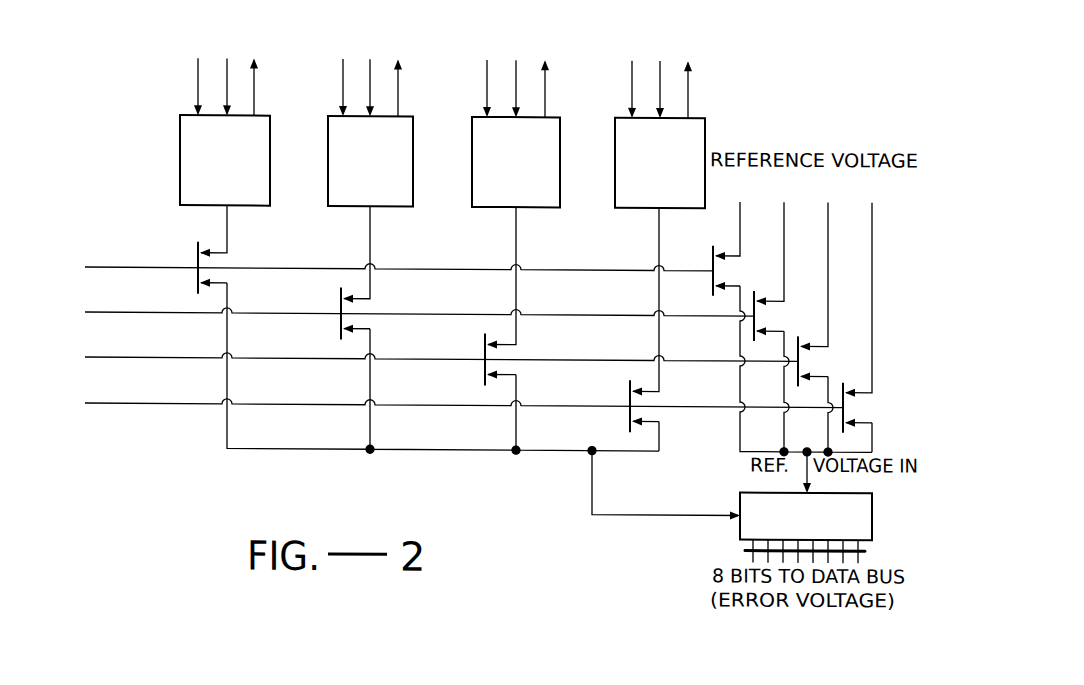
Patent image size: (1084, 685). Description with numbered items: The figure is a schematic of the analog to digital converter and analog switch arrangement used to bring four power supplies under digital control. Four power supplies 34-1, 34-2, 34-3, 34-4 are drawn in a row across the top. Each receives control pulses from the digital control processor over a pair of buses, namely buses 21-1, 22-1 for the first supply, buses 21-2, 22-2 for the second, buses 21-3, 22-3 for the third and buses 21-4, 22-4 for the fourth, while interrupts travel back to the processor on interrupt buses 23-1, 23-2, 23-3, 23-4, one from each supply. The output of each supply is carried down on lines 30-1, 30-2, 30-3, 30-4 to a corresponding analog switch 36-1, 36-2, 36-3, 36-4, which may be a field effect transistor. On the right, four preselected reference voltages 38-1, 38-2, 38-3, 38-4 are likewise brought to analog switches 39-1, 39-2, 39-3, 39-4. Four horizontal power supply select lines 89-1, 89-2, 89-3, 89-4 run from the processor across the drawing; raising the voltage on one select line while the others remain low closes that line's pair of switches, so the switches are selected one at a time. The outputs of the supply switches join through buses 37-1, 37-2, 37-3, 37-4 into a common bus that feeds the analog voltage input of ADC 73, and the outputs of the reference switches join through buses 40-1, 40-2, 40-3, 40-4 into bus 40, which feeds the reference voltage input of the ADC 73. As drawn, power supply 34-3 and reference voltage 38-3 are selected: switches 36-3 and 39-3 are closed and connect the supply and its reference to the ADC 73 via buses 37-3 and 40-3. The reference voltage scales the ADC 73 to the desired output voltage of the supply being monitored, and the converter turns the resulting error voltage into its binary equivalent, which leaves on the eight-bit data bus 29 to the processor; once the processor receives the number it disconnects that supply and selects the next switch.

The control pulse bus 21-1 is at (197, 67).
The control pulse bus 22-1 is at (226, 68).
The interrupt bus 23-1 is at (255, 98).
The control pulse bus 21-2 is at (342, 67).
The control pulse bus 22-2 is at (369, 68).
The interrupt bus 23-2 is at (399, 98).
The control pulse bus 21-3 is at (486, 67).
The control pulse bus 22-3 is at (515, 68).
The interrupt bus 23-3 is at (546, 98).
The control pulse bus 21-4 is at (631, 67).
The control pulse bus 22-4 is at (659, 68).
The interrupt bus 23-4 is at (689, 98).
The power supply 34-1 is at (184, 204).
The power supply 34-2 is at (340, 204).
The power supply 34-3 is at (488, 204).
The power supply 34-4 is at (632, 204).
The power supply 1 output line 30-1 is at (229, 240).
The power supply 2 output line 30-2 is at (372, 243).
The power supply 3 output line 30-3 is at (518, 243).
The power supply 4 output line 30-4 is at (661, 240).
The analog switch 36-1 is at (196, 252).
The analog switch 36-2 is at (339, 298).
The analog switch 36-3 is at (483, 343).
The analog switch 36-4 is at (628, 389).
The bus 37-1 is at (226, 427).
The bus 37-2 is at (368, 427).
The bus 37-3 is at (514, 429).
The bus 37-4 is at (640, 441).
The power supply select line 89-1 is at (367, 268).
The power supply select line 89-2 is at (388, 313).
The power supply select line 89-3 is at (410, 359).
The power supply select line 89-4 is at (432, 405).
The reference voltage 38-1 is at (738, 219).
The reference voltage 38-2 is at (783, 241).
The reference voltage 38-3 is at (830, 264).
The reference voltage 38-4 is at (877, 288).
The analog switch 39-1 is at (715, 269).
The analog switch 39-2 is at (756, 315).
The analog switch 39-3 is at (800, 360).
The analog switch 39-4 is at (850, 400).
The bus 40-1 is at (739, 421).
The bus 40-2 is at (782, 430).
The bus 40-3 is at (873, 424).
The bus 40-4 is at (873, 444).
The bus 40 is at (810, 477).
The ADC 73 is at (872, 519).
The 8 bit data bus 29 is at (866, 546).